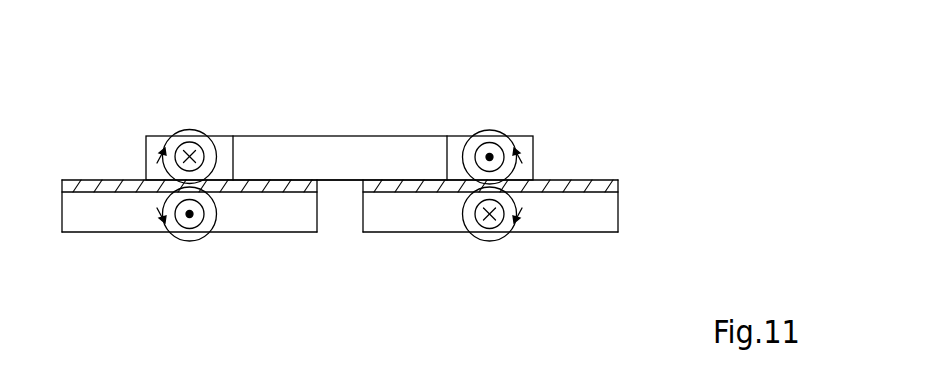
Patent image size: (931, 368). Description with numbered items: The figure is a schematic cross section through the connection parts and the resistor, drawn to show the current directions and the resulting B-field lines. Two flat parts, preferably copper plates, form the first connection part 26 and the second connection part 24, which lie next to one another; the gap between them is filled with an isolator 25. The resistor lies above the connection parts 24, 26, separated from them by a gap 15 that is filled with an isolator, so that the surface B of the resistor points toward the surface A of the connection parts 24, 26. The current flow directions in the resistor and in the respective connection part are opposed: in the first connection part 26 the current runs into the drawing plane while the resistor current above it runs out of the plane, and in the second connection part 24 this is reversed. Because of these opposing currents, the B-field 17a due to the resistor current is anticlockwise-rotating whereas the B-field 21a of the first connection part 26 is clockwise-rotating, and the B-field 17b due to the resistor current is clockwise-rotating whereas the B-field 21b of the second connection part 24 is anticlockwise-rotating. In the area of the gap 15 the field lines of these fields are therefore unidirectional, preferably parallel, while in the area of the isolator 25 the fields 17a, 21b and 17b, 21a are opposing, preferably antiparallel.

The gap 15 is at (622, 192).
The B-field 17a is at (495, 128).
The B-field 17b is at (185, 128).
The B-field 21a is at (495, 240).
The B-field 21b is at (183, 240).
The second connection part 24 is at (88, 213).
The isolator 25 is at (339, 210).
The first connection part 26 is at (592, 215).
The surface of the connection parts A is at (110, 175).
The surface of the resistor B is at (228, 199).